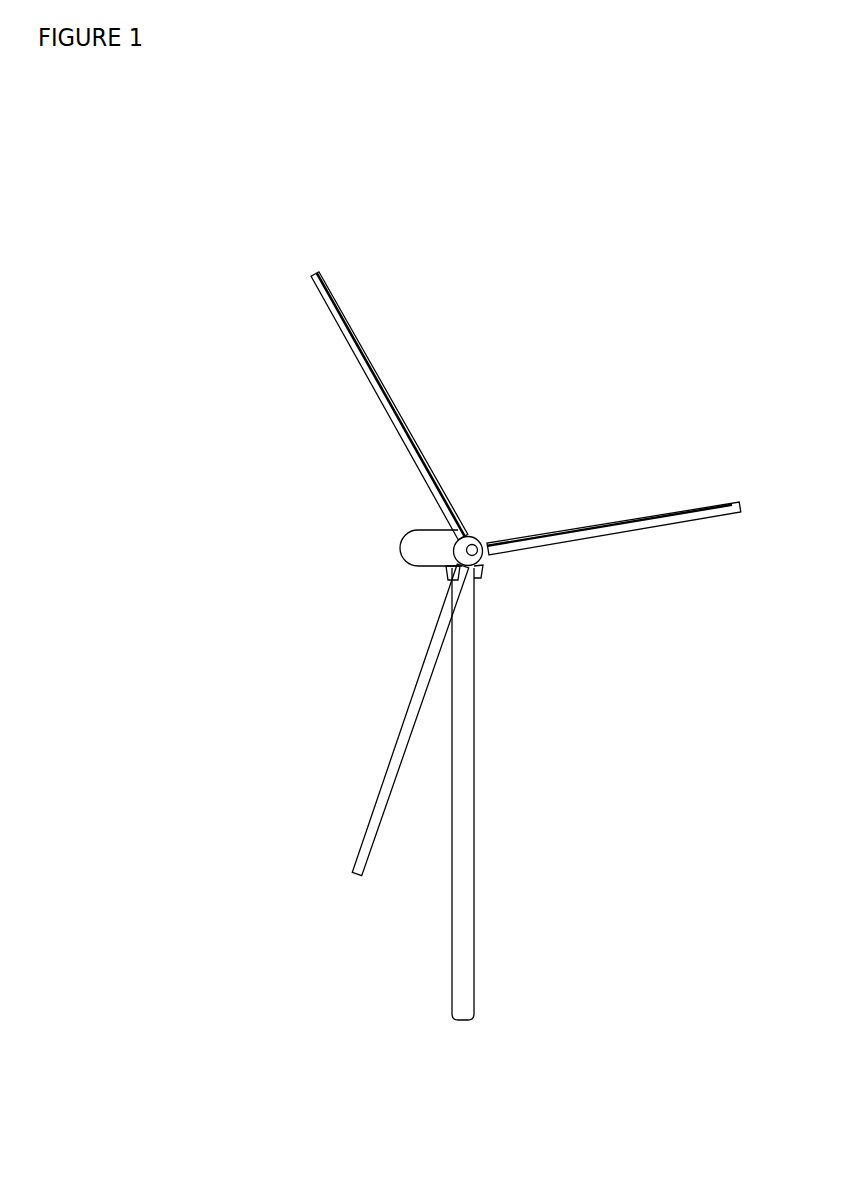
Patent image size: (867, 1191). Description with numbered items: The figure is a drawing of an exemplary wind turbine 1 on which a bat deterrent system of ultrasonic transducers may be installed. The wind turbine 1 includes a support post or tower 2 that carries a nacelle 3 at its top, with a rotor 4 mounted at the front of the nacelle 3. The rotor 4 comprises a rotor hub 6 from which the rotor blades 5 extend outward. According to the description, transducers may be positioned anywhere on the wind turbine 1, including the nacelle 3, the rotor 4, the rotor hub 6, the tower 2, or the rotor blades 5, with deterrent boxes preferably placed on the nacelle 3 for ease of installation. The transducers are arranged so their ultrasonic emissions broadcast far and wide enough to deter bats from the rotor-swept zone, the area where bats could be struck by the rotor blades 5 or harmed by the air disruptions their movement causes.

The wind turbine 1 is at (542, 646).
The support post or tower 2 is at (509, 794).
The nacelle 3 is at (382, 570).
The rotor 4 is at (502, 479).
The rotor blades 5 is at (727, 468).
The rotor hub 6 is at (535, 617).